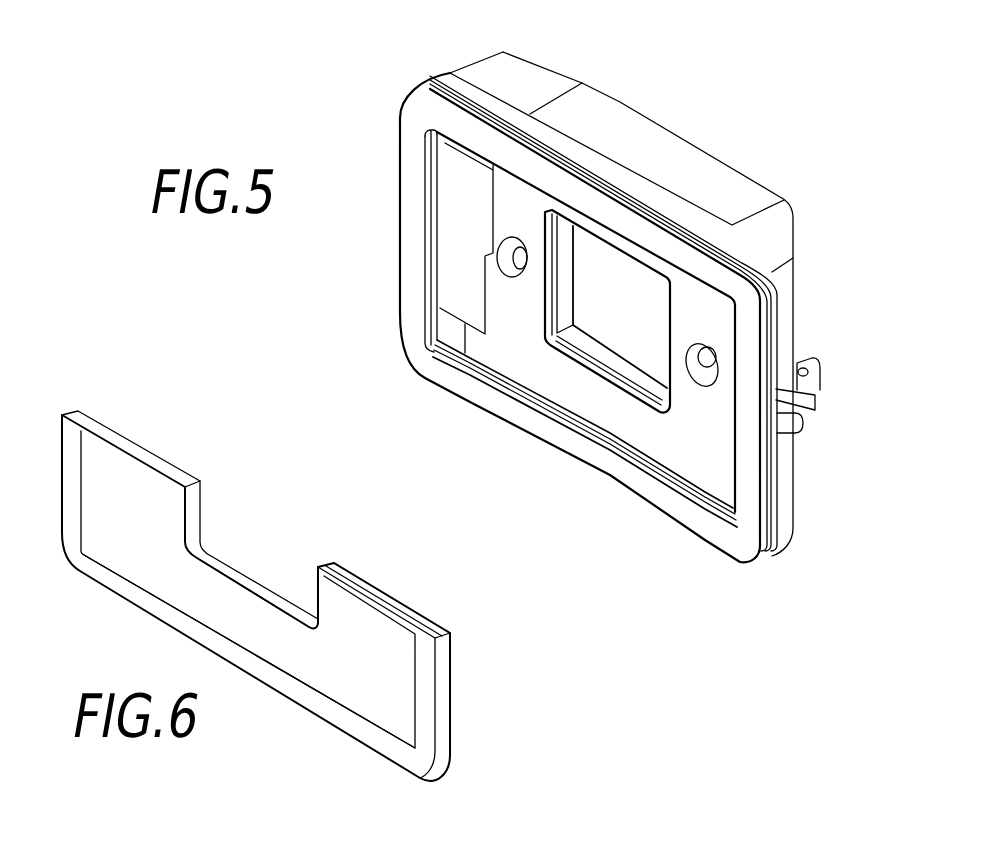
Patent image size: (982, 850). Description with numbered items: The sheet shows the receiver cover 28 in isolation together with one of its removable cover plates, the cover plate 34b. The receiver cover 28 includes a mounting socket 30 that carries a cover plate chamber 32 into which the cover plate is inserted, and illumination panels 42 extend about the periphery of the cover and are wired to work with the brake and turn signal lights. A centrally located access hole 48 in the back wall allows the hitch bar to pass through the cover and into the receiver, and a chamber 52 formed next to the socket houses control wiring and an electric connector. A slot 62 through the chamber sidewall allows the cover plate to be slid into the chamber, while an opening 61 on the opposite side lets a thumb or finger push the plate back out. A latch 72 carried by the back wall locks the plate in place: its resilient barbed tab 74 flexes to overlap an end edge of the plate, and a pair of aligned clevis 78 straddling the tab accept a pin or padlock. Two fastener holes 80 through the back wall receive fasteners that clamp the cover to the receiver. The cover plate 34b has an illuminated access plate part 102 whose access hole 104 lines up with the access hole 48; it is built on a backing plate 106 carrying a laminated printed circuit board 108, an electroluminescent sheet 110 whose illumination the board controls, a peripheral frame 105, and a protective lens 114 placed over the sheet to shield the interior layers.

In FIG. 5, the receiver cover 28 is at (740, 116).
In FIG. 5, the mounting socket 30 is at (609, 95).
In FIG. 5, the cover plate chamber 32 is at (710, 460).
In FIG. 5, the illumination panel 42 is at (413, 112).
In FIG. 5, the access hole 48 is at (630, 308).
In FIG. 5, the chamber 52 is at (518, 80).
In FIG. 5, the opening 61 is at (448, 332).
In FIG. 5, the slot 62 is at (782, 500).
In FIG. 5, the latch 72 is at (820, 392).
In FIG. 5, the resilient barbed tab 74 is at (803, 434).
In FIG. 5, the clevis 78 is at (807, 362).
In FIG. 5, the fastener holes 80 is at (512, 278).
In FIG. 6, the cover plate 34b is at (461, 698).
In FIG. 6, the access plate part 102 is at (124, 541).
In FIG. 6, the access hole 104 is at (275, 561).
In FIG. 6, the peripheral frame 105 is at (330, 717).
In FIG. 6, the backing plate 106 is at (427, 613).
In FIG. 6, the printed circuit board 108 is at (373, 590).
In FIG. 6, the electroluminescent sheet 110 is at (347, 577).
In FIG. 6, the protective lens 114 is at (318, 565).